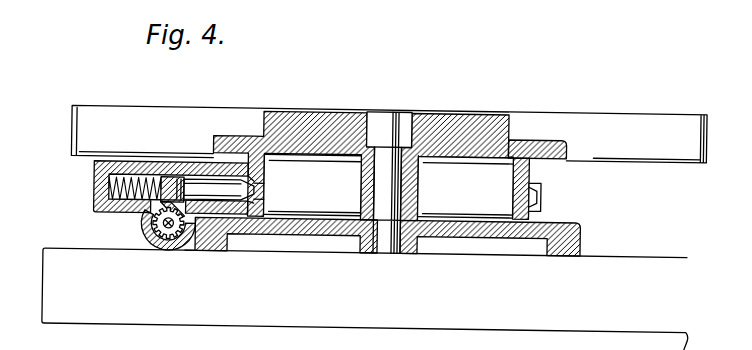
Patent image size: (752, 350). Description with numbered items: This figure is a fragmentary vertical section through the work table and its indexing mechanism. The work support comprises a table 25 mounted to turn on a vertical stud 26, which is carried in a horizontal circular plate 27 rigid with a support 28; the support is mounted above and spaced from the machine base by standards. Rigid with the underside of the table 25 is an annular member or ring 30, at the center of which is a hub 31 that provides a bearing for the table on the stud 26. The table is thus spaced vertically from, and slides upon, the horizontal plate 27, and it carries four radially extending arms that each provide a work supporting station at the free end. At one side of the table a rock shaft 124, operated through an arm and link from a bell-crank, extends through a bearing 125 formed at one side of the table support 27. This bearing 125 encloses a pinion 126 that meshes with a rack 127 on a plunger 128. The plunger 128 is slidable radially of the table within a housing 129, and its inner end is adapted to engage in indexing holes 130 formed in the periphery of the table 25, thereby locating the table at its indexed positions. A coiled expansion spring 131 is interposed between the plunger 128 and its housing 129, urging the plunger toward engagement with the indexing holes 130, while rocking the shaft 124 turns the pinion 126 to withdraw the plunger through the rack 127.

The table 25 is at (435, 123).
The vertical stud 26 is at (392, 178).
The horizontal circular plate 27 is at (312, 234).
The support 28 is at (365, 299).
The annular member or ring 30 is at (543, 148).
The hub 31 is at (202, 112).
The rock shaft 124 is at (147, 224).
The bearing 125 is at (160, 248).
The pinion 126 is at (183, 247).
The rack 127 is at (140, 214).
The plunger 128 is at (170, 161).
The housing 129 is at (107, 159).
The indexing holes 130 is at (265, 190).
The coiled expansion spring 131 is at (93, 182).